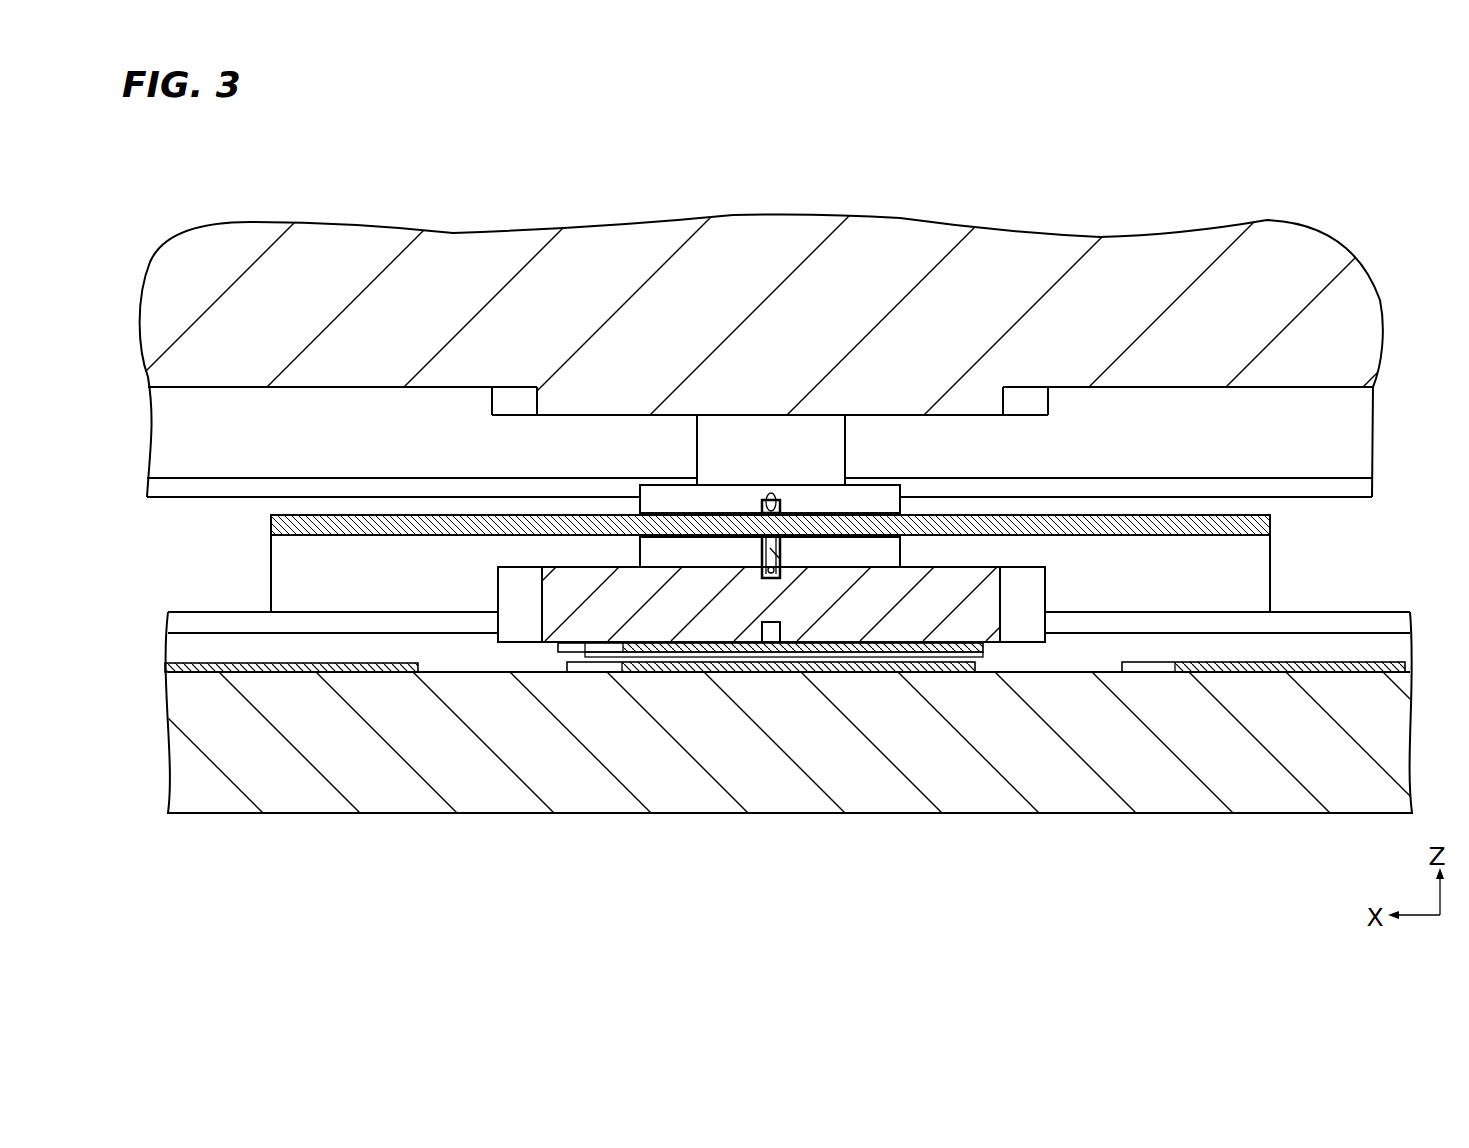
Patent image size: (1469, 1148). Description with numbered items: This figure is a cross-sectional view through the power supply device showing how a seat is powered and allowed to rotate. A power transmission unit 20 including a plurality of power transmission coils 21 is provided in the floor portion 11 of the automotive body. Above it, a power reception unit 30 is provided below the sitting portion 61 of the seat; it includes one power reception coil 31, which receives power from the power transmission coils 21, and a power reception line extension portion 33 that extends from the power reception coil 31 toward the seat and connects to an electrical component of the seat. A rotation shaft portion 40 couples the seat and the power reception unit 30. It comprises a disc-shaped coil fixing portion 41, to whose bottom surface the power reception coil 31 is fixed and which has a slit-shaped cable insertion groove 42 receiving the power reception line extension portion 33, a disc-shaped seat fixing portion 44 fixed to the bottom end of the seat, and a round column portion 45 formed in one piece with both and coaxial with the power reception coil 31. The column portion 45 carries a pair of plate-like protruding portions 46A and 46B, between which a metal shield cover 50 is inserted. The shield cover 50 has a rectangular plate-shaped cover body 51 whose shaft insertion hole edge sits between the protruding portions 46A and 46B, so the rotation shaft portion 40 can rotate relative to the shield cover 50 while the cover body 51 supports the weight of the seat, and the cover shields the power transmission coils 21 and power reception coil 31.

The floor portion 11 is at (541, 787).
The power transmission unit 20 is at (1322, 580).
The power transmission coils 21 is at (236, 672).
The power reception unit 30 is at (770, 743).
The power reception coil 31 is at (803, 660).
The power reception line extension portion 33 is at (779, 558).
The rotation shaft portion 40 is at (771, 374).
The coil fixing portion 41 is at (925, 587).
The cable insertion groove 42 is at (770, 580).
The seat fixing portion 44 is at (688, 397).
The column portion 45 is at (767, 447).
The protruding portion 46A is at (660, 500).
The protruding portion 46B is at (655, 560).
The shield cover 50 is at (770, 342).
The cover body 51 is at (968, 527).
The sitting portion 61 is at (1340, 338).